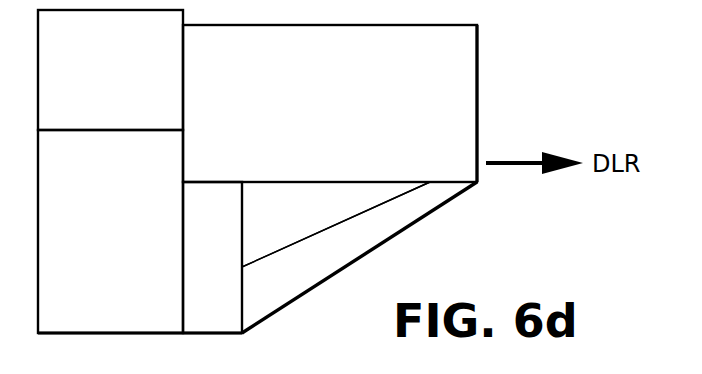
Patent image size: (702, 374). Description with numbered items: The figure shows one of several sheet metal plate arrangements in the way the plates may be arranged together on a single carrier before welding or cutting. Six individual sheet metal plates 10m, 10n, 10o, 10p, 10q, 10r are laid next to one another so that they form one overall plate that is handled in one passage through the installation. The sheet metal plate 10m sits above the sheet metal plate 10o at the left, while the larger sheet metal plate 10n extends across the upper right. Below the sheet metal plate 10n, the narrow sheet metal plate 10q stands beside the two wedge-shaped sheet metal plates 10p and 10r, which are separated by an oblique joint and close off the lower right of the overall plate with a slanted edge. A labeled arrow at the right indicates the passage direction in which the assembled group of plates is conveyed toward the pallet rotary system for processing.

The sheet metal plate 10m is at (128, 79).
The sheet metal plate 10n is at (313, 131).
The sheet metal plate 10o is at (122, 264).
The sheet metal plate 10p is at (300, 221).
The sheet metal plate 10q is at (232, 276).
The sheet metal plate 10r is at (290, 294).